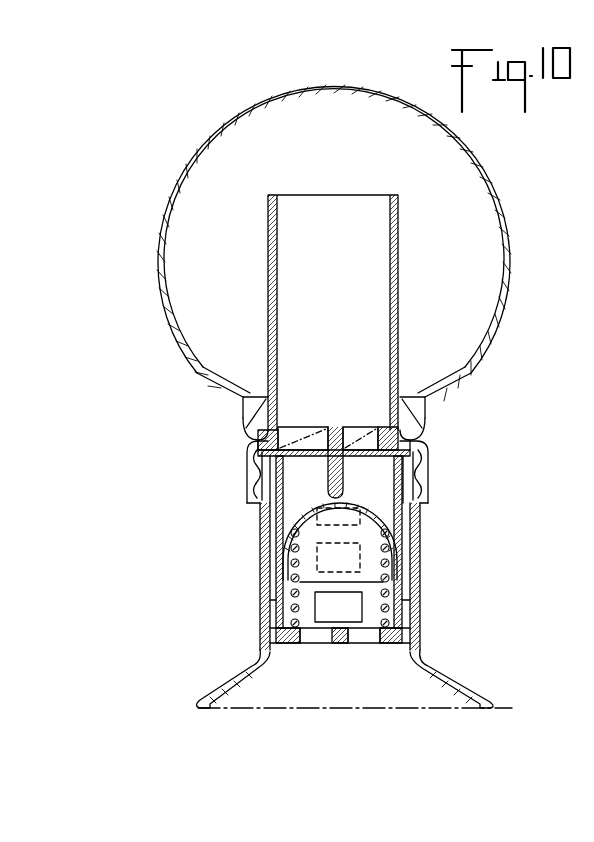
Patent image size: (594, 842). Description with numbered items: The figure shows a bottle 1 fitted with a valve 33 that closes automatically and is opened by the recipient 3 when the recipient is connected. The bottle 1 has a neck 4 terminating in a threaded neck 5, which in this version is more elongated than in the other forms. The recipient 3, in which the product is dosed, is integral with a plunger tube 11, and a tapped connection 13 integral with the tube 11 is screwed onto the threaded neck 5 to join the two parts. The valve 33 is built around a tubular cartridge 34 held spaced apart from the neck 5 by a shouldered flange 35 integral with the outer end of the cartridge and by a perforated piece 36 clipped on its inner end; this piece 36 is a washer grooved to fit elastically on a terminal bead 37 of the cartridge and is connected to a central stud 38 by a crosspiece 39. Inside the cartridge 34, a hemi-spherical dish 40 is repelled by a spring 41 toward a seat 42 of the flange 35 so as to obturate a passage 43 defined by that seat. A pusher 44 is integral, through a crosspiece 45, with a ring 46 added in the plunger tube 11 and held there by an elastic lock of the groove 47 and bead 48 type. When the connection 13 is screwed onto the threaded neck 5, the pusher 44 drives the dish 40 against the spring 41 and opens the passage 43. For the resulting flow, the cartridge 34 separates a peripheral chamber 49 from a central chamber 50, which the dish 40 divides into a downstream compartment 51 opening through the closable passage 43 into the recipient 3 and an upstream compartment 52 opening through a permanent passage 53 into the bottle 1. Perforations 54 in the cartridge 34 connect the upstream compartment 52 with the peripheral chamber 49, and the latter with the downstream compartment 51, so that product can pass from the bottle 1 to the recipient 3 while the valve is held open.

The bottle 1 is at (202, 688).
The recipient 3 is at (191, 165).
The neck 4 is at (448, 682).
The threaded neck 5 is at (266, 482).
The plunger tube 11 is at (268, 279).
The tapped connection 13 is at (250, 470).
The valve 33 is at (366, 606).
The tubular cartridge 34 is at (276, 508).
The shouldered flange 35 is at (253, 453).
The perforated piece 36 is at (300, 645).
The terminal bead 37 is at (284, 645).
The central stud 38 is at (342, 645).
The crosspiece 39 is at (314, 645).
The hemi-spherical dish 40 is at (358, 458).
The spring 41 is at (387, 606).
The seat 42 is at (310, 452).
The passage 43 is at (358, 448).
The pusher 44 is at (338, 428).
The crosspiece 45 is at (318, 430).
The ring 46 is at (304, 446).
The groove 47 is at (262, 440).
The bead 48 is at (286, 440).
The peripheral chamber 49 is at (270, 566).
The central chamber 50 is at (361, 530).
The downstream compartment 51 is at (423, 470).
The upstream compartment 52 is at (372, 571).
The permanent passage 53 is at (369, 647).
The perforations 54 is at (280, 530).